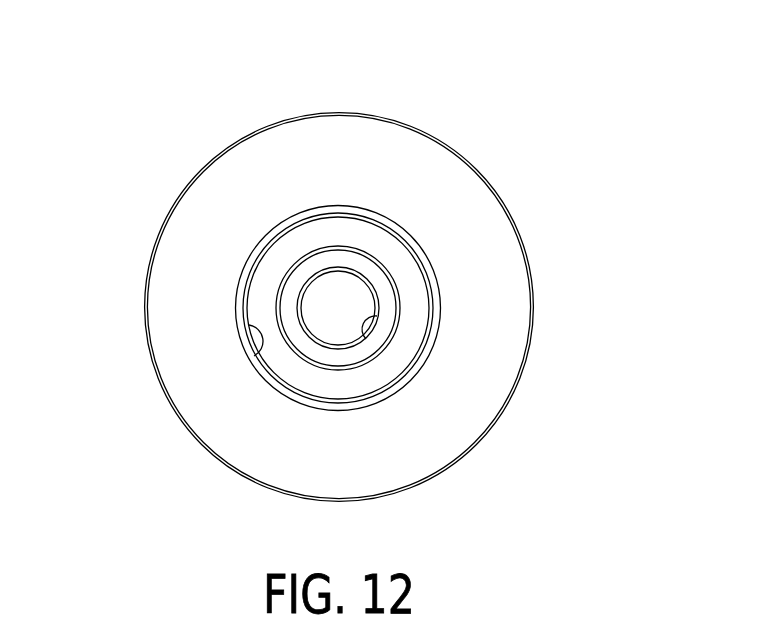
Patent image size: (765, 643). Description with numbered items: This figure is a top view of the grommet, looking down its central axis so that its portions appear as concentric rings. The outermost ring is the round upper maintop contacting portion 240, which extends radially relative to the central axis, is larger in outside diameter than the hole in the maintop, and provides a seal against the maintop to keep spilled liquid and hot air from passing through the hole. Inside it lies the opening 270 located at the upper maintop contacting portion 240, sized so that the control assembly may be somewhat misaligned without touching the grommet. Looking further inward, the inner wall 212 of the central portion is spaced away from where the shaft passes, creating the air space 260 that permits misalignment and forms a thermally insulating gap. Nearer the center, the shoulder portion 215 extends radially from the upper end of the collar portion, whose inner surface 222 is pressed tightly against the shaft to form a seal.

The upper maintop contacting portion 240 is at (418, 173).
The air space 260 is at (322, 207).
The opening 270 is at (265, 245).
The shoulder portion 215 is at (378, 278).
The inner wall 212 is at (258, 327).
The inner surface 222 is at (365, 316).